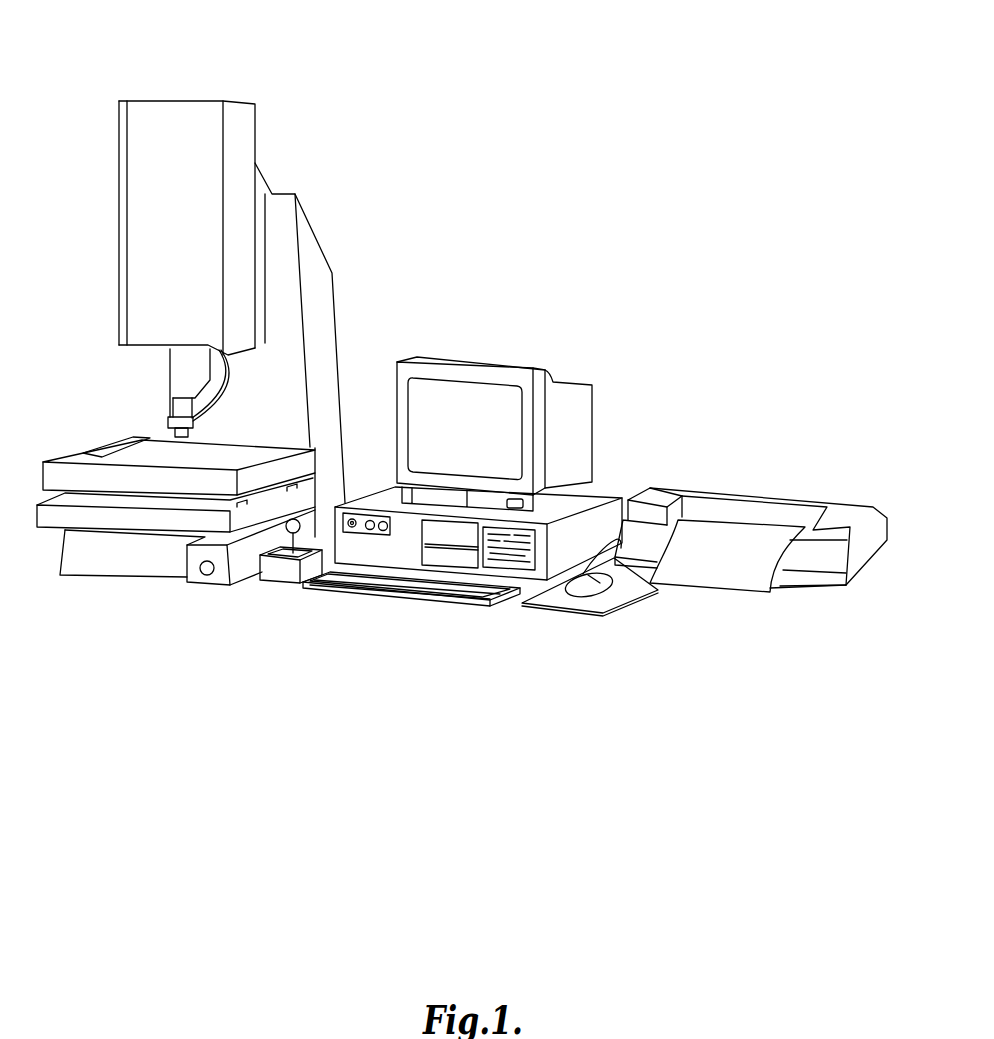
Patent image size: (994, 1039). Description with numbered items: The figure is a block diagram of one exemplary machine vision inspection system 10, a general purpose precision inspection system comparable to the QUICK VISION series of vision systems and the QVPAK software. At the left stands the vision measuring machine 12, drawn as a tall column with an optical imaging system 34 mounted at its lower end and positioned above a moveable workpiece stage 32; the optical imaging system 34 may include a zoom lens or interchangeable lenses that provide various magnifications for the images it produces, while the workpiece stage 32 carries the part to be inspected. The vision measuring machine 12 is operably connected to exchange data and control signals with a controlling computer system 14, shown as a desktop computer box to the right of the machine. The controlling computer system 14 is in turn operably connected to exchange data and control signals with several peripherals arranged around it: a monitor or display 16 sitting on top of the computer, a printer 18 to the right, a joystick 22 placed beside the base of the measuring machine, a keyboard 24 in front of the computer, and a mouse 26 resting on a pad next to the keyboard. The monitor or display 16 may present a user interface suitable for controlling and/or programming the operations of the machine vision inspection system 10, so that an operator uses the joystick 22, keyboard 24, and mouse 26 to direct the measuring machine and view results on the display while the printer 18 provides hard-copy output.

The machine vision inspection system 10 is at (597, 165).
The vision measuring machine 12 is at (173, 100).
The controlling computer system 14 is at (597, 497).
The monitor or display 16 is at (478, 360).
The printer 18 is at (760, 493).
The joystick 22 is at (277, 583).
The keyboard 24 is at (397, 599).
The mouse 26 is at (602, 596).
The moveable workpiece stage 32 is at (92, 443).
The optical imaging system 34 is at (168, 349).